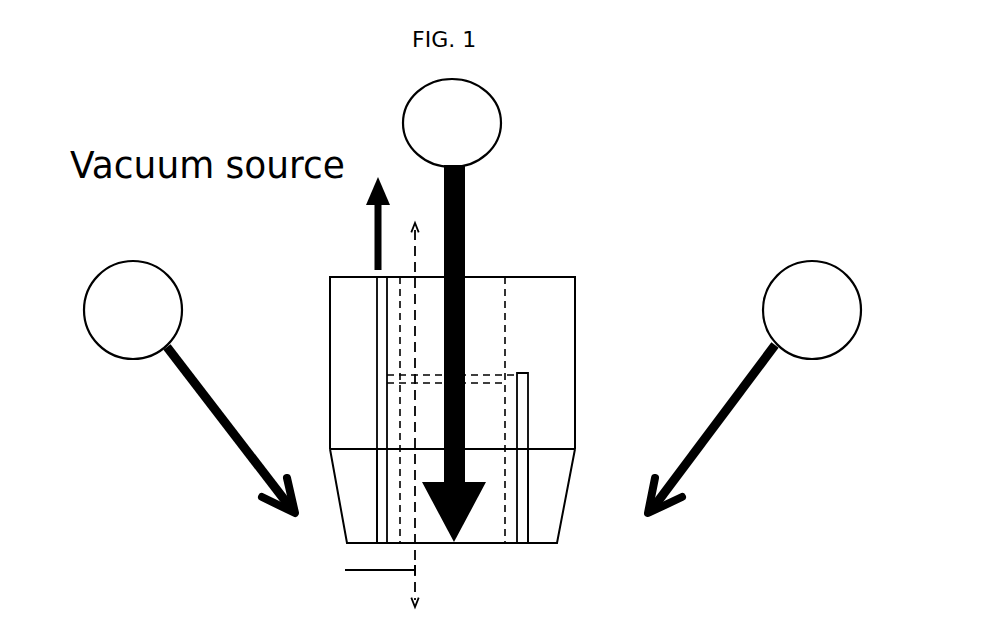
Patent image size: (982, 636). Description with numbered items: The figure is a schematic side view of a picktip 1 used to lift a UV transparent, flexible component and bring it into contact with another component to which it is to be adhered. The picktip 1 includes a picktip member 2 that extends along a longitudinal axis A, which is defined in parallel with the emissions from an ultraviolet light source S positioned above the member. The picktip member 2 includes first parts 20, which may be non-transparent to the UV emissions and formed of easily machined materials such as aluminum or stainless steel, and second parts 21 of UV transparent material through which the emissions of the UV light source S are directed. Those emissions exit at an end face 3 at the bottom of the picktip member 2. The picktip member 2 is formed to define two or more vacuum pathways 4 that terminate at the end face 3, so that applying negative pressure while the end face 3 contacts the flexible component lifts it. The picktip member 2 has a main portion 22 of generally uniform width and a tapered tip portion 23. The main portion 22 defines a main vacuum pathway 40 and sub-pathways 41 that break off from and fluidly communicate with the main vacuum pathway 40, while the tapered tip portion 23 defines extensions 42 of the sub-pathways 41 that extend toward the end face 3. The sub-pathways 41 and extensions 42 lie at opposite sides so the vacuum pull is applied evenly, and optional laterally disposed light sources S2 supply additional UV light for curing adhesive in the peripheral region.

The picktip 1 is at (250, 497).
The picktip member 2 is at (523, 277).
The end face 3 is at (485, 543).
The vacuum pathways 4 is at (534, 397).
The first parts 20 is at (369, 410).
The second parts 21 is at (452, 410).
The main portion 22 is at (575, 305).
The tapered tip portion 23 is at (565, 508).
The main vacuum pathway 40 is at (377, 355).
The sub-pathways 41 is at (377, 409).
The extensions 42 is at (383, 482).
The ultraviolet light source S is at (618, 310).
The laterally disposed light sources S2 is at (183, 308).
The longitudinal axis A is at (370, 570).